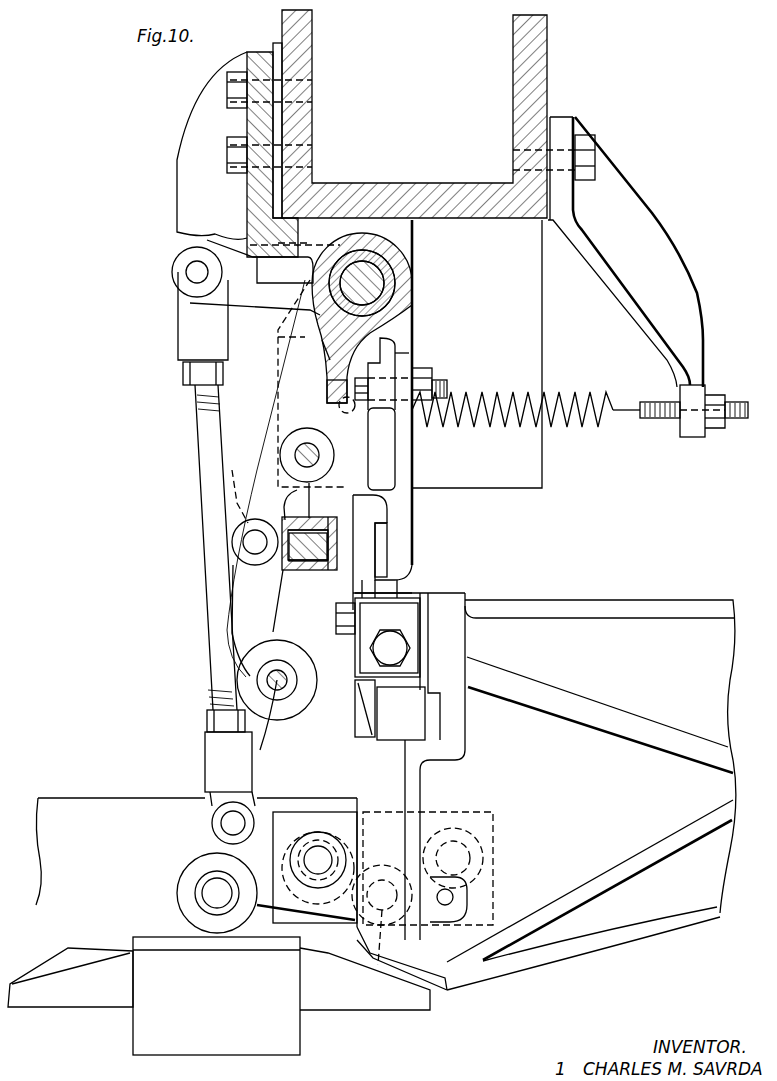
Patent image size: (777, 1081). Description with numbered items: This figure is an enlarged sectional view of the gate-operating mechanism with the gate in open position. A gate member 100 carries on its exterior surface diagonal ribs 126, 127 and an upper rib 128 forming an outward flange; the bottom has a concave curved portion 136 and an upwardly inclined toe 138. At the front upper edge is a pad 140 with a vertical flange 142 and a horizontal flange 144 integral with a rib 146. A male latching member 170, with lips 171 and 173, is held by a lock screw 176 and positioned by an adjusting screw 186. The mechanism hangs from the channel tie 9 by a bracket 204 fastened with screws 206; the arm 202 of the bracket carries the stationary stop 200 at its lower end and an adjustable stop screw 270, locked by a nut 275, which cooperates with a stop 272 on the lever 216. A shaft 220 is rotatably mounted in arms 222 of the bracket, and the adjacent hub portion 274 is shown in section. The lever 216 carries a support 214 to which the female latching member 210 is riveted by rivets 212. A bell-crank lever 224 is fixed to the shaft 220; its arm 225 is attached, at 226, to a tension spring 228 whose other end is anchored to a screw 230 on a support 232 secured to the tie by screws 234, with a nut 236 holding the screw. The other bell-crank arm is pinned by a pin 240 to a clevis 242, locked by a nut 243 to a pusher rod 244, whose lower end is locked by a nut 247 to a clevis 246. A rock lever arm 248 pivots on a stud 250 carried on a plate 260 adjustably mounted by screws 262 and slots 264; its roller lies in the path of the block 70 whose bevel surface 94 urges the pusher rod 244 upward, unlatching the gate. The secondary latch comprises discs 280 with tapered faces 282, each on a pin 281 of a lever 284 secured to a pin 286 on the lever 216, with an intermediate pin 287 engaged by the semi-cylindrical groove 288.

The channel tie 9 is at (312, 49).
The bracket 204 is at (247, 122).
The screws 206 is at (227, 83).
The screws 234 is at (598, 160).
The support 232 is at (672, 248).
The screw 230 is at (665, 420).
The nut 236 is at (715, 430).
The tension spring 228 is at (492, 387).
The shaft 220 is at (412, 284).
The hub neck 274 is at (333, 362).
The stop 272 is at (327, 391).
The pin 240 is at (186, 271).
The clevis 242 is at (180, 336).
The nut 243 is at (183, 377).
The bell-crank lever 224 is at (268, 306).
The arms 222 is at (283, 332).
The arm 225 is at (413, 346).
The nut 275 is at (430, 364).
The stop screw 270 is at (442, 384).
The spring attachment point 226 is at (356, 412).
The arm 202 is at (404, 468).
The stop 200 is at (360, 506).
The lip 171 is at (366, 540).
The pin 286 is at (295, 455).
The semi-cylindrical groove 288 is at (263, 470).
The pin 287 is at (243, 543).
The lever 216 is at (272, 420).
The female latching member 210 is at (324, 571).
The rivets 212 is at (278, 572).
The support 214 is at (298, 580).
The pusher rod 244 is at (208, 528).
The lever 284 is at (240, 582).
The discs 280 is at (236, 676).
The tapered face 282 is at (305, 720).
The pin 281 is at (278, 725).
The nut 247 is at (207, 721).
The clevis 246 is at (205, 756).
The male latching member 170 is at (354, 648).
The adjusting screw 186 is at (386, 640).
The lock screw 176 is at (337, 628).
The lip 173 is at (355, 715).
The horizontal flange 144 is at (388, 742).
The vertical flange 142 is at (424, 649).
The pad 140 is at (465, 737).
The rib 146 is at (404, 786).
The gate member 100 is at (651, 595).
The rib 128 is at (638, 617).
The rib 126 is at (630, 724).
The rib 127 is at (648, 850).
The curved bottom portion 136 is at (633, 934).
The plate 260 is at (318, 818).
The rock lever arm 248 is at (332, 905).
The slots 264 is at (180, 890).
The screws 262 is at (326, 852).
The stud 250 is at (383, 953).
The toe 138 is at (428, 980).
The block 70 is at (281, 996).
The bevel surface 94 is at (133, 936).